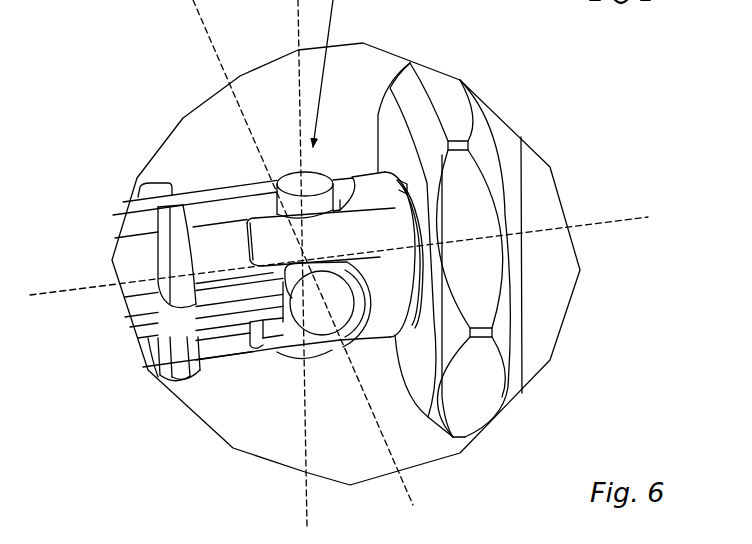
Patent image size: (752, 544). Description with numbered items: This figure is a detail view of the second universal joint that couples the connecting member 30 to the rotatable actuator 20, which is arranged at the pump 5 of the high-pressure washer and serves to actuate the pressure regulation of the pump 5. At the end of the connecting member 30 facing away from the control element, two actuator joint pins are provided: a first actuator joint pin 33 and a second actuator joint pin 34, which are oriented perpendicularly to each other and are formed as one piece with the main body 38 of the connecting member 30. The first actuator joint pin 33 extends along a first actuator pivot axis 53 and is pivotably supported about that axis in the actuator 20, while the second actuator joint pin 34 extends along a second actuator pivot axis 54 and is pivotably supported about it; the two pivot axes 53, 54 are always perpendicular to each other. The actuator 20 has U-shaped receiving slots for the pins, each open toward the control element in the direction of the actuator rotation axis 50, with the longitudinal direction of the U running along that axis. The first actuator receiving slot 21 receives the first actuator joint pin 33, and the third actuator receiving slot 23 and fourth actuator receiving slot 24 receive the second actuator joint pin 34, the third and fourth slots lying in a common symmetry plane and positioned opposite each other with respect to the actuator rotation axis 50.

The pump 5 is at (553, 293).
The actuator 20 is at (365, 218).
The first actuator receiving slot 21 is at (273, 277).
The third actuator receiving slot 23 is at (262, 213).
The fourth actuator receiving slot 24 is at (247, 353).
The connecting member 30 is at (142, 268).
The first actuator joint pin 33 is at (337, 268).
The second actuator joint pin 34 is at (287, 199).
The main body 38 is at (150, 252).
The actuator rotation axis 50 is at (598, 222).
The first actuator pivot axis 53 is at (408, 502).
The second actuator pivot axis 54 is at (304, 504).